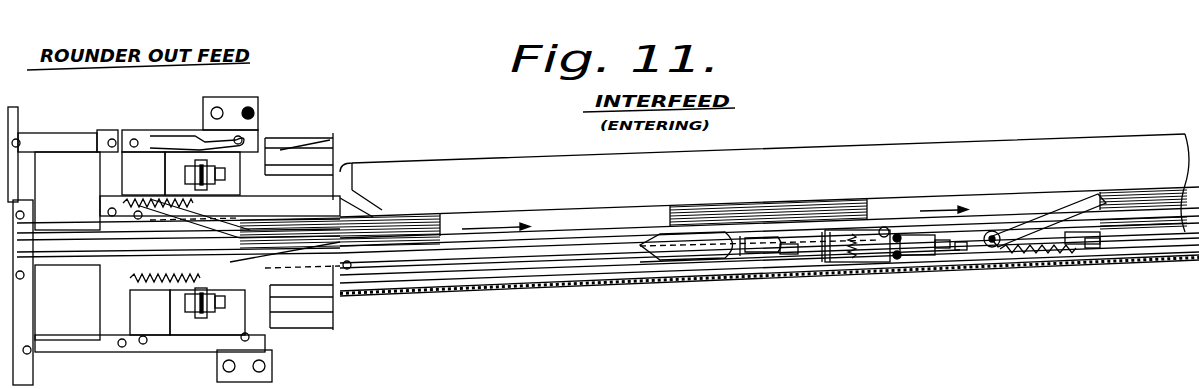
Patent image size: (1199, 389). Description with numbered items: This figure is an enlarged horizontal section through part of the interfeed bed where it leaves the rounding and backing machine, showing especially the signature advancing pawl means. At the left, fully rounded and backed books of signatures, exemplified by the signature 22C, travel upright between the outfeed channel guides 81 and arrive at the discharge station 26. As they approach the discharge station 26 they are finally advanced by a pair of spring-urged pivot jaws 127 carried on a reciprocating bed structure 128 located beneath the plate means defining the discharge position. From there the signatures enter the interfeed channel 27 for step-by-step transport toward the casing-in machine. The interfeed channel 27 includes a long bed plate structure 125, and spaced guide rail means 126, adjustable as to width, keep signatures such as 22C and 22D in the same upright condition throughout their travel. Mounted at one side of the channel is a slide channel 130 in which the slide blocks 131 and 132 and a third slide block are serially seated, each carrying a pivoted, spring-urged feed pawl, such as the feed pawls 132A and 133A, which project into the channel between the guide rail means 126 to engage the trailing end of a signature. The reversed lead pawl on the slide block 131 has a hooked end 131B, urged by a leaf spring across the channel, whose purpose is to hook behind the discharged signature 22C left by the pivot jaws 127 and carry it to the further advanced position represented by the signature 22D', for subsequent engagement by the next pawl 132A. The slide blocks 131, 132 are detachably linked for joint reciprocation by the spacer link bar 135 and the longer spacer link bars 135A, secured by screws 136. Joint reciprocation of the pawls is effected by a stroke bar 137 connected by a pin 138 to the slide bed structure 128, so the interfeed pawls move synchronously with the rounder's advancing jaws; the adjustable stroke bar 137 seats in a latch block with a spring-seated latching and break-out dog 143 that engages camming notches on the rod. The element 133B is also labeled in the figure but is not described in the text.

The discharge station 26 is at (82, 112).
The reciprocating bed structure 128 is at (72, 140).
The outfeed channel guides 81 is at (45, 230).
The spring-urged pivot jaws 127 is at (200, 248).
The pin 138 is at (128, 296).
The book of signatures 22C is at (418, 220).
The bed plate structure 125 is at (563, 223).
The hooked end 131B is at (643, 227).
The signature 22D is at (768, 198).
The guide rail means 126 is at (530, 260).
The feed pawl 132A is at (1070, 210).
The signature 22D' is at (1145, 187).
The spacer link bar 135 is at (950, 243).
The stroke bar 137 is at (407, 263).
The slide channel 130 is at (482, 264).
The interfeed channel 27 is at (665, 300).
The slide block 131 is at (787, 263).
The latching and break-out dog 143 is at (840, 257).
The slide block 132 is at (970, 250).
The spacer link bars 135A is at (1187, 385).
The feed pawl 133A is at (1088, 388).
The screws 136 is at (1138, 388).
The lever 133B is at (982, 388).